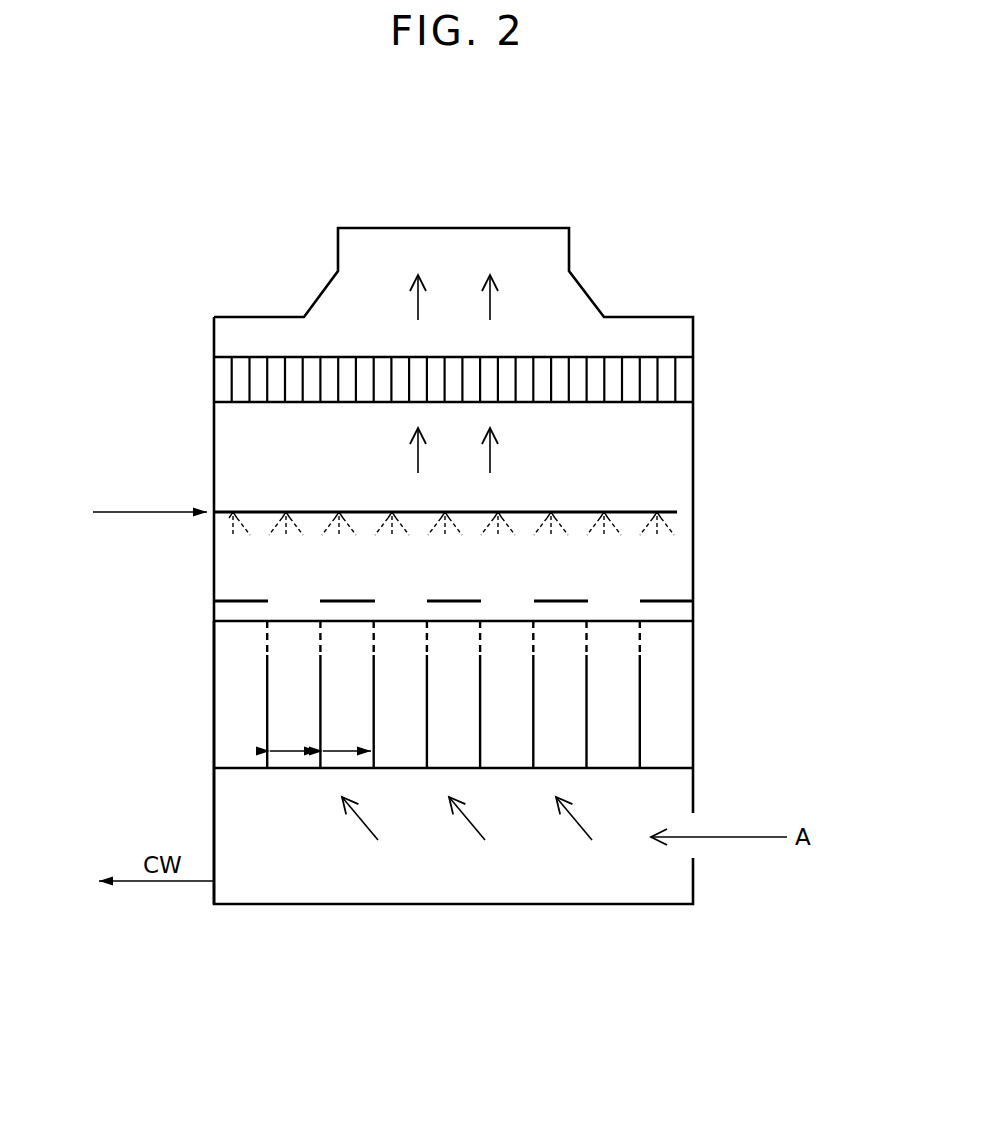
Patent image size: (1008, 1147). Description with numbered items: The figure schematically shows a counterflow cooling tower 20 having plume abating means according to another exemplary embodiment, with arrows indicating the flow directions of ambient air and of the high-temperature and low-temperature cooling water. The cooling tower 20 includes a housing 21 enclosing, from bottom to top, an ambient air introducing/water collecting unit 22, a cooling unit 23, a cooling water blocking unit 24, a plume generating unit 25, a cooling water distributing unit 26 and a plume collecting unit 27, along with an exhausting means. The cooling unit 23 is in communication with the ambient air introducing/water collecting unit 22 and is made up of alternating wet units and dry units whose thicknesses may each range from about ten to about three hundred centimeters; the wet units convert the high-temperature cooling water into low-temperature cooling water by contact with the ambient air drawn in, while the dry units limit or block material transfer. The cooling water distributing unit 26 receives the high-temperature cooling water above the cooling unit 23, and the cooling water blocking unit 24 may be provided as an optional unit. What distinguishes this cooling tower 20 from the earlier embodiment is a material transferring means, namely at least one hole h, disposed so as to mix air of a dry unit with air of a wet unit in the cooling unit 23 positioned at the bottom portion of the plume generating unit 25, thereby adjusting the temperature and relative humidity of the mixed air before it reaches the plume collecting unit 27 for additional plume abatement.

The cooling tower 20 is at (677, 210).
The housing 21 is at (214, 725).
The ambient air introducing/water collecting unit 22 is at (473, 868).
The cooling unit 23 is at (710, 621).
The cooling water blocking unit 24 is at (671, 592).
The plume generating unit 25 is at (370, 563).
The cooling water distributing unit 26 is at (644, 506).
The plume collecting unit 27 is at (704, 380).
The hole h is at (255, 643).